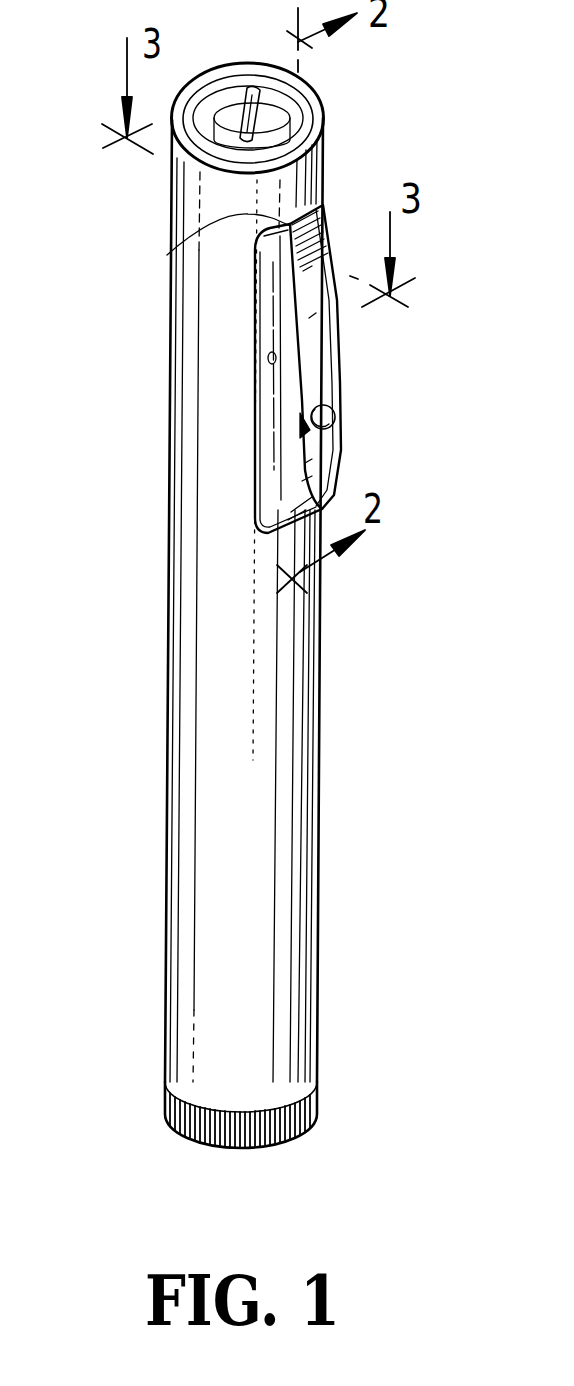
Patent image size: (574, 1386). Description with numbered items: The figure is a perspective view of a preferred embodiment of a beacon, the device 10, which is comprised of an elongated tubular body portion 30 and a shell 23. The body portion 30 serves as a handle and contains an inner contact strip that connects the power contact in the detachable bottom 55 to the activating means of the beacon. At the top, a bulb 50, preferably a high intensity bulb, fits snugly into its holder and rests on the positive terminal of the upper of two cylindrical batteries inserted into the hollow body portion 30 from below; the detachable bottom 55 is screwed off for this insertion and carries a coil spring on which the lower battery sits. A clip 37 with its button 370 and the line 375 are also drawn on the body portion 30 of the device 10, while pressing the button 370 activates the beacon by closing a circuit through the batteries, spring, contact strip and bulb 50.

The device 10 is at (131, 919).
The shell 23 is at (207, 93).
The tubular body portion 30 is at (162, 1004).
The clip 37 is at (332, 452).
The push button 370 is at (336, 412).
The seam line 375 is at (166, 256).
The bulb 50 is at (252, 98).
The detachable bottom 55 is at (235, 1128).